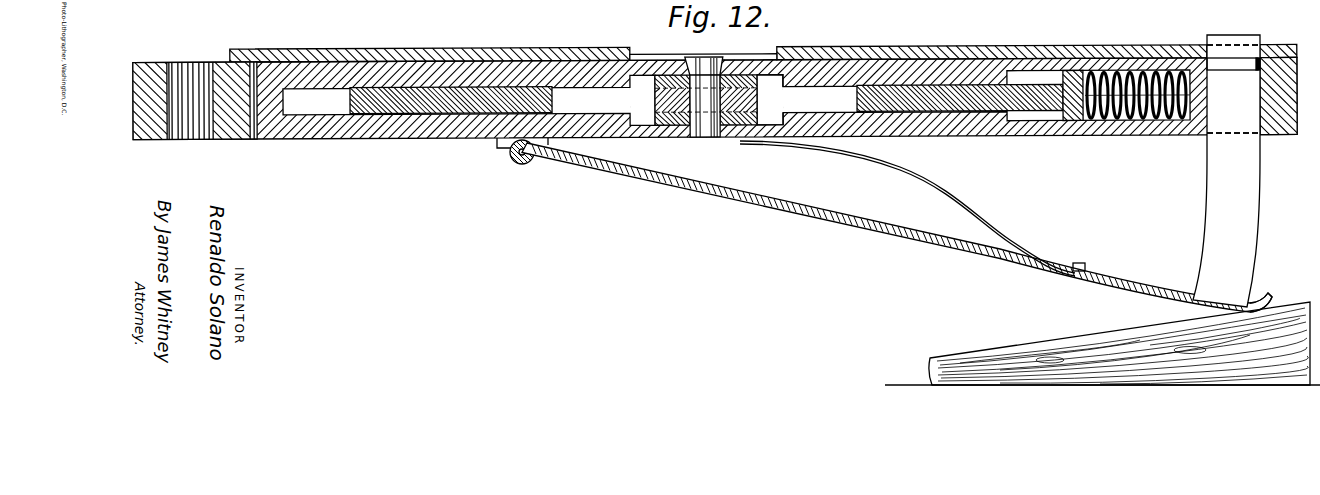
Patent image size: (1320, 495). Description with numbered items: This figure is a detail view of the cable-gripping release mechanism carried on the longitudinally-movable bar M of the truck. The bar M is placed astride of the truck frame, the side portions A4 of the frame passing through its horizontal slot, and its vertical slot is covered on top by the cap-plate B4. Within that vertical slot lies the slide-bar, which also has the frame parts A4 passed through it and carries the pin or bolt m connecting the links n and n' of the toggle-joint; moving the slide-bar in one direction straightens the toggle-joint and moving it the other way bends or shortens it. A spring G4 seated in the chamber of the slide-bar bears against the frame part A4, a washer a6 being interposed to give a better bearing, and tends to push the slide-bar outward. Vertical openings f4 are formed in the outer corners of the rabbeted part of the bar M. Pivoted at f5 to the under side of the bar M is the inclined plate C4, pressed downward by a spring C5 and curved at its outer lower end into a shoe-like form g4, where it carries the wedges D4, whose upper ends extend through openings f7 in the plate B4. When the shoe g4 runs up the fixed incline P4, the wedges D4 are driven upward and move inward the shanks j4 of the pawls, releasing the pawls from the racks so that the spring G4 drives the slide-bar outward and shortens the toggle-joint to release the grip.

The cap-plate B4 is at (763, 41).
The longitudinally-movable bar M is at (195, 116).
The side portions of the frame A4 is at (706, 98).
The link of the toggle-joint n' is at (695, 100).
The link of the toggle-joint n is at (770, 100).
The pin or bolt m is at (706, 139).
The pivot of the inclined plate f5 is at (517, 160).
The inclined plate C4 is at (897, 227).
The spring C5 is at (912, 208).
The washer a6 is at (1064, 136).
The spring G4 is at (1156, 112).
The shanks of the pawls j4 is at (1224, 90).
The openings in the cap-plate f7 is at (1262, 45).
The vertical openings f4 is at (1262, 134).
The inclined planes or wedges D4 is at (1226, 171).
The shoe-like end g4 is at (1274, 292).
The fixed incline P4 is at (1119, 343).